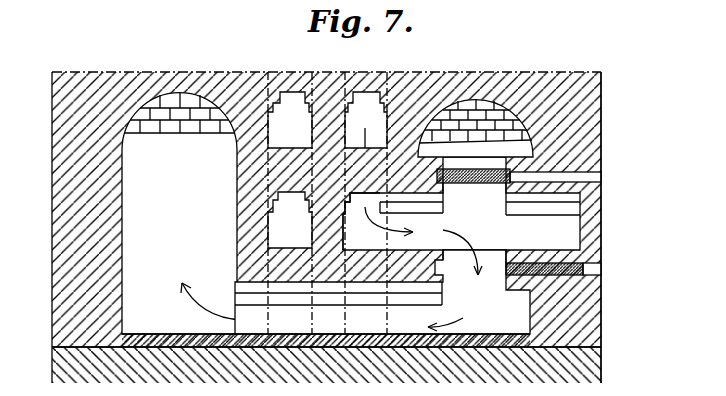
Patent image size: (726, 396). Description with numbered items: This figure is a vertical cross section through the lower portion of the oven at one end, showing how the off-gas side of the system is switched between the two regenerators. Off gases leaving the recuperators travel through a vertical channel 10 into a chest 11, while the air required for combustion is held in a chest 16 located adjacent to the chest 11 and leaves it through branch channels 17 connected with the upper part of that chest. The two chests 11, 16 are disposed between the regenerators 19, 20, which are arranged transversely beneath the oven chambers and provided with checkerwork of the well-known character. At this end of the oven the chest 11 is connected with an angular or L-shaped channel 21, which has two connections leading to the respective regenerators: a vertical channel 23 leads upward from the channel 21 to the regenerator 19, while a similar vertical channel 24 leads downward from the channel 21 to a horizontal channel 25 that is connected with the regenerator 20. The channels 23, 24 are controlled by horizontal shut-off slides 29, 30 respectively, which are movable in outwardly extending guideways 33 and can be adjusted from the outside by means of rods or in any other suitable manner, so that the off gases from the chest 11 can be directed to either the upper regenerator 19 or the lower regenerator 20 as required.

The vertical channel 10 is at (379, 77).
The chest 11 is at (378, 222).
The chest 16 is at (290, 220).
The branch channels 17 is at (268, 90).
The regenerator 19 is at (496, 100).
The regenerator 20 is at (195, 131).
The angular or L-shaped channel 21 is at (461, 203).
The vertical channel 23 is at (486, 175).
The vertical channel 24 is at (474, 250).
The horizontal channel 25 is at (382, 293).
The shut-off slide 29 is at (464, 185).
The shut-off slide 30 is at (563, 276).
The guideways 33 is at (601, 176).